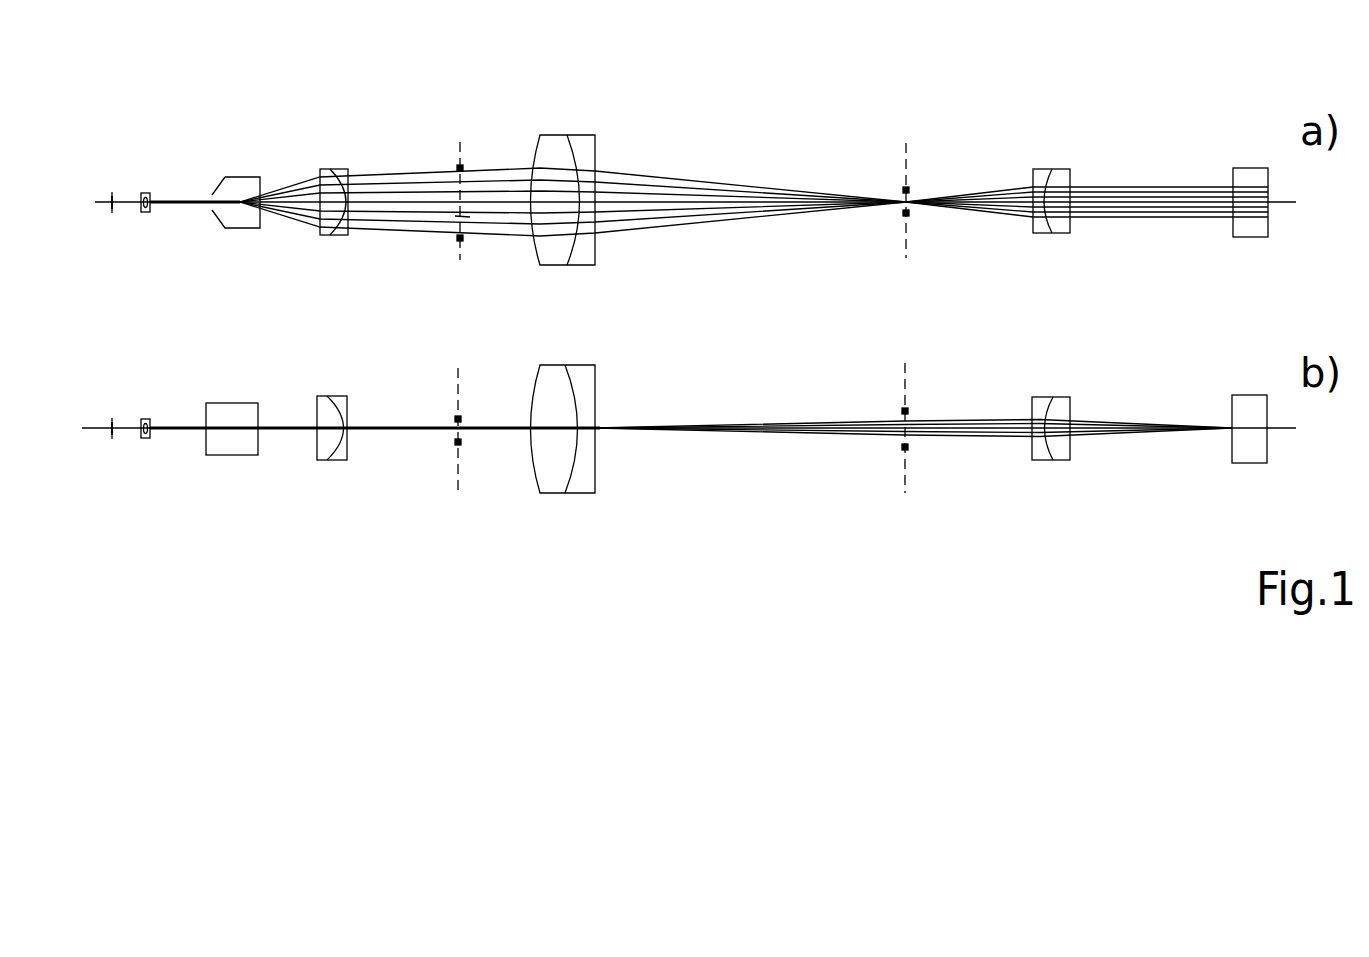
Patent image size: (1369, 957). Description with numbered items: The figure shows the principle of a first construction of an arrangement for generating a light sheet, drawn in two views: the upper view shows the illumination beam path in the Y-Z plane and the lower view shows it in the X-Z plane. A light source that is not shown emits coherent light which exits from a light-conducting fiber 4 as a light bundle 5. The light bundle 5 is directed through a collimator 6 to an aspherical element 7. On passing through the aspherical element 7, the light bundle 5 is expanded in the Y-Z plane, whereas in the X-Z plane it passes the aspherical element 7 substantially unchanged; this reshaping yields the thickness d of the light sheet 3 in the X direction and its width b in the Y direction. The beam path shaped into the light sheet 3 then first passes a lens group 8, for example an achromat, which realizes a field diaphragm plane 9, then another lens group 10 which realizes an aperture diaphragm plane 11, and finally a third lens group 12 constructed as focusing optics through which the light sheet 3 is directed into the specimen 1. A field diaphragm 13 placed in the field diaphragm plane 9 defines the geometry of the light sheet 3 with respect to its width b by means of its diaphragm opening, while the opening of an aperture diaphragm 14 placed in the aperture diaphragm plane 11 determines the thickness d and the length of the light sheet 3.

The specimen 1 is at (1245, 402).
The light sheet 3 is at (383, 423).
The light-conducting fiber 4 is at (99, 424).
The light bundle 5 is at (130, 197).
The collimator 6 is at (143, 421).
The aspherical element 7 is at (232, 182).
The lens group 8 is at (327, 397).
The field diaphragm plane 9 is at (465, 425).
The lens group 10 is at (597, 395).
The aperture diaphragm plane 11 is at (908, 235).
The third lens group 12 is at (1053, 403).
The field diaphragm 13 is at (455, 418).
The aperture diaphragm 14 is at (906, 216).